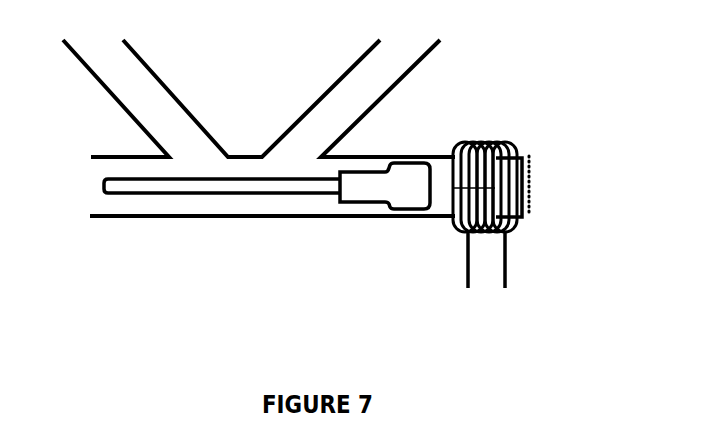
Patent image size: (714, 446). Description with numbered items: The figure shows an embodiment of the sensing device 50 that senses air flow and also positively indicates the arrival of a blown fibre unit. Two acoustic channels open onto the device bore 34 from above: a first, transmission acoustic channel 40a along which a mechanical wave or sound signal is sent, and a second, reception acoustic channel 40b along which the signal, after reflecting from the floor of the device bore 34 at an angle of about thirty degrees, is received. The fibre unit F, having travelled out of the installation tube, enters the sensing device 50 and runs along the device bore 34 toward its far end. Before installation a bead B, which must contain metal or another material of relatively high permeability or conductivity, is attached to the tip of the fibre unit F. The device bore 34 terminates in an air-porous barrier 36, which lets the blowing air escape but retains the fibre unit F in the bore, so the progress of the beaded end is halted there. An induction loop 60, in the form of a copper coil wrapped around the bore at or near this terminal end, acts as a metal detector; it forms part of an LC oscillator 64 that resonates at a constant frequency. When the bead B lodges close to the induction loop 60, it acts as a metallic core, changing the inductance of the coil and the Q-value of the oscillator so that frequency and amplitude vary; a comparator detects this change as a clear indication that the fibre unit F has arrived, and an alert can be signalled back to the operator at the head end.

The first, transmission acoustic channel 40a is at (172, 90).
The second, reception acoustic channel 40b is at (332, 90).
The device bore 34 is at (102, 206).
The fibre unit F is at (245, 196).
The bead B is at (404, 198).
The induction loop 60 is at (478, 143).
The air-porous barrier 36 is at (528, 192).
The LC oscillator 64 is at (487, 273).
The sensing device 50 is at (146, 278).